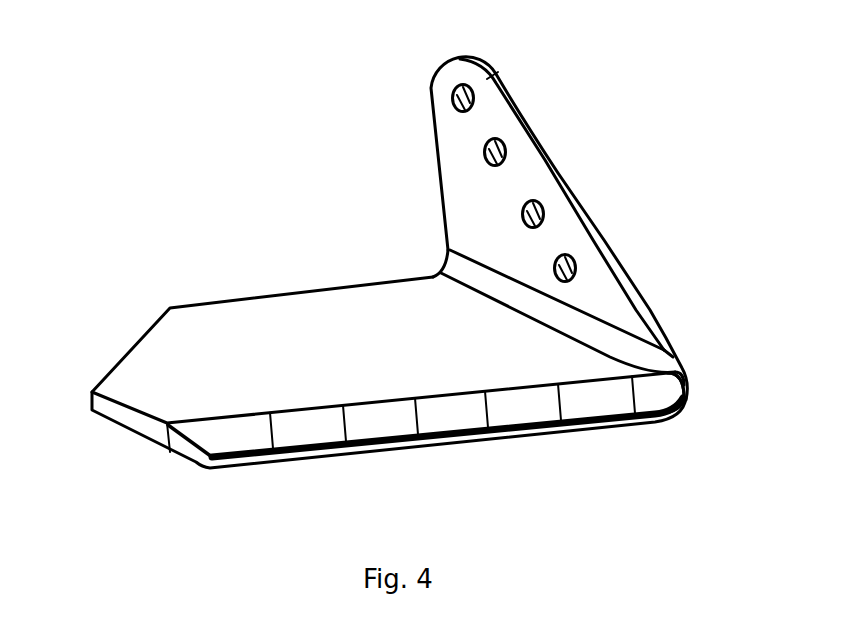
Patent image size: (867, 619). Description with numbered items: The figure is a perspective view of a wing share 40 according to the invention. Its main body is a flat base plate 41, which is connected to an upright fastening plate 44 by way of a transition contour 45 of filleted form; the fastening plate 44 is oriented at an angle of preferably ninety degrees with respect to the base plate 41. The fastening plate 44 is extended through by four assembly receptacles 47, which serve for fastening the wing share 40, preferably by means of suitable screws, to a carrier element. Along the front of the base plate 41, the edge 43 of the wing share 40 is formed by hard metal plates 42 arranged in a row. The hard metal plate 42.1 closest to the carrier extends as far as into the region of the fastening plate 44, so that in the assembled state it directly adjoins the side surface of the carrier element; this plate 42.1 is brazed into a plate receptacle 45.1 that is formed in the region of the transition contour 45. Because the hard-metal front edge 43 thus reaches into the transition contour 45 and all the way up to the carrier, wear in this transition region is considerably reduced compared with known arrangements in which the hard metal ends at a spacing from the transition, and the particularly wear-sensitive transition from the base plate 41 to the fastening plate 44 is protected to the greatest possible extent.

The wing share 40 is at (240, 248).
The base plate 41 is at (168, 337).
The hard metal plates 42 is at (377, 423).
The hard metal plate close to the carrier 42.1 is at (653, 395).
The edge 43 is at (408, 443).
The fastening plate 44 is at (570, 228).
The transition contour 45 is at (657, 360).
The plate receptacle 45.1 is at (683, 370).
The assembly receptacles 47 is at (553, 265).